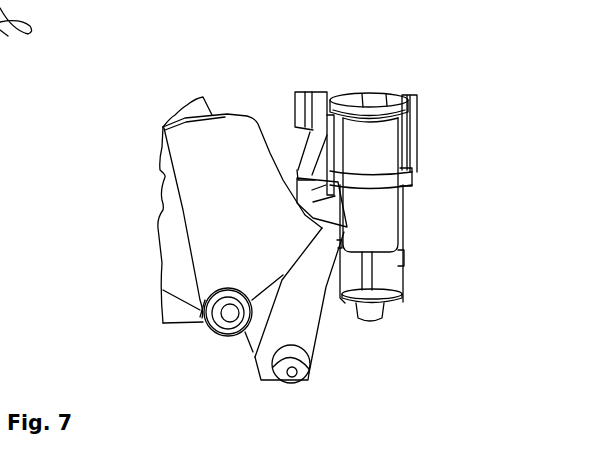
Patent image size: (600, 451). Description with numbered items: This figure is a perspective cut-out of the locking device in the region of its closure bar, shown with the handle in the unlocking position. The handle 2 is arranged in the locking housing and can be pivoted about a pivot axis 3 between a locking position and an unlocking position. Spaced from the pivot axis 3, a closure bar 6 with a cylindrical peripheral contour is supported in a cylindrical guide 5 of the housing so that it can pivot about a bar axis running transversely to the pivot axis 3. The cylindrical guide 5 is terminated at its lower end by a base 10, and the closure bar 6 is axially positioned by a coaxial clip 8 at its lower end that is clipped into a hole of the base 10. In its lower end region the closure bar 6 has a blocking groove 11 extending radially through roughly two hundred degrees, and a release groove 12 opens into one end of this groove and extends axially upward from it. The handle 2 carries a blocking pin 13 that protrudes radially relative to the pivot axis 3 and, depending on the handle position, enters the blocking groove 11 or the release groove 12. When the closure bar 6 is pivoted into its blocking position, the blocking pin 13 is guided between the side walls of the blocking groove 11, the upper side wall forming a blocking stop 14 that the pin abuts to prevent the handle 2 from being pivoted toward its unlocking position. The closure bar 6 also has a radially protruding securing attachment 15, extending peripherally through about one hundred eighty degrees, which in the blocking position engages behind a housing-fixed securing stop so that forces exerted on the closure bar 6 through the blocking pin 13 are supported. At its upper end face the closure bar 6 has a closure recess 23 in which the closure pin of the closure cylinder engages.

The handle 2 is at (193, 163).
The pivot axis 3 is at (223, 318).
The cylindrical guide 5 is at (407, 235).
The closure bar 6 is at (383, 213).
The coaxial clip 8 is at (370, 321).
The base 10 is at (402, 302).
The blocking groove 11 is at (385, 275).
The release groove 12 is at (340, 247).
The blocking pin 13 is at (323, 217).
The blocking stop 14 is at (400, 259).
The securing attachment 15 is at (407, 180).
The closure recess 23 is at (373, 92).